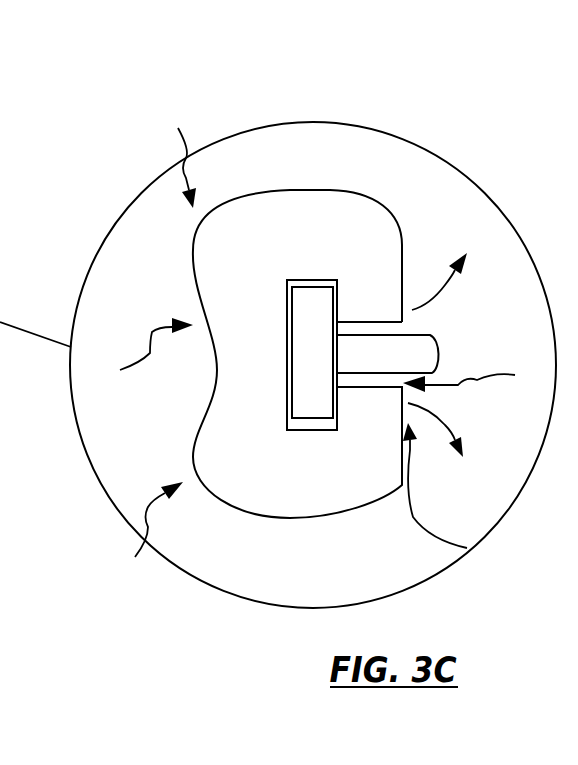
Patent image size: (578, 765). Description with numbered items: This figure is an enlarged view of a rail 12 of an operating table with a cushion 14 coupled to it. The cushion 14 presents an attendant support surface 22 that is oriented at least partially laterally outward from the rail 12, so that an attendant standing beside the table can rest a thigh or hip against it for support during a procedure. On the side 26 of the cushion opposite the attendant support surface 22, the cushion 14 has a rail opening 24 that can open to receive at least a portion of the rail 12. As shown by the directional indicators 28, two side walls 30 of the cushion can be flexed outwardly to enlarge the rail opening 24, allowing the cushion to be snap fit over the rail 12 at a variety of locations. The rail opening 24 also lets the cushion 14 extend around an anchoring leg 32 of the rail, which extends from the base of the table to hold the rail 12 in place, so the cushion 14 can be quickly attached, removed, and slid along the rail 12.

The rail 12 is at (308, 358).
The cushion 14 is at (260, 212).
The attendant support surface 22 is at (142, 341).
The rail opening 24 is at (473, 382).
The side of the cushion 26 is at (463, 548).
The directional indicators 28 is at (440, 292).
The side walls 30 is at (370, 268).
The anchoring leg 32 is at (428, 358).